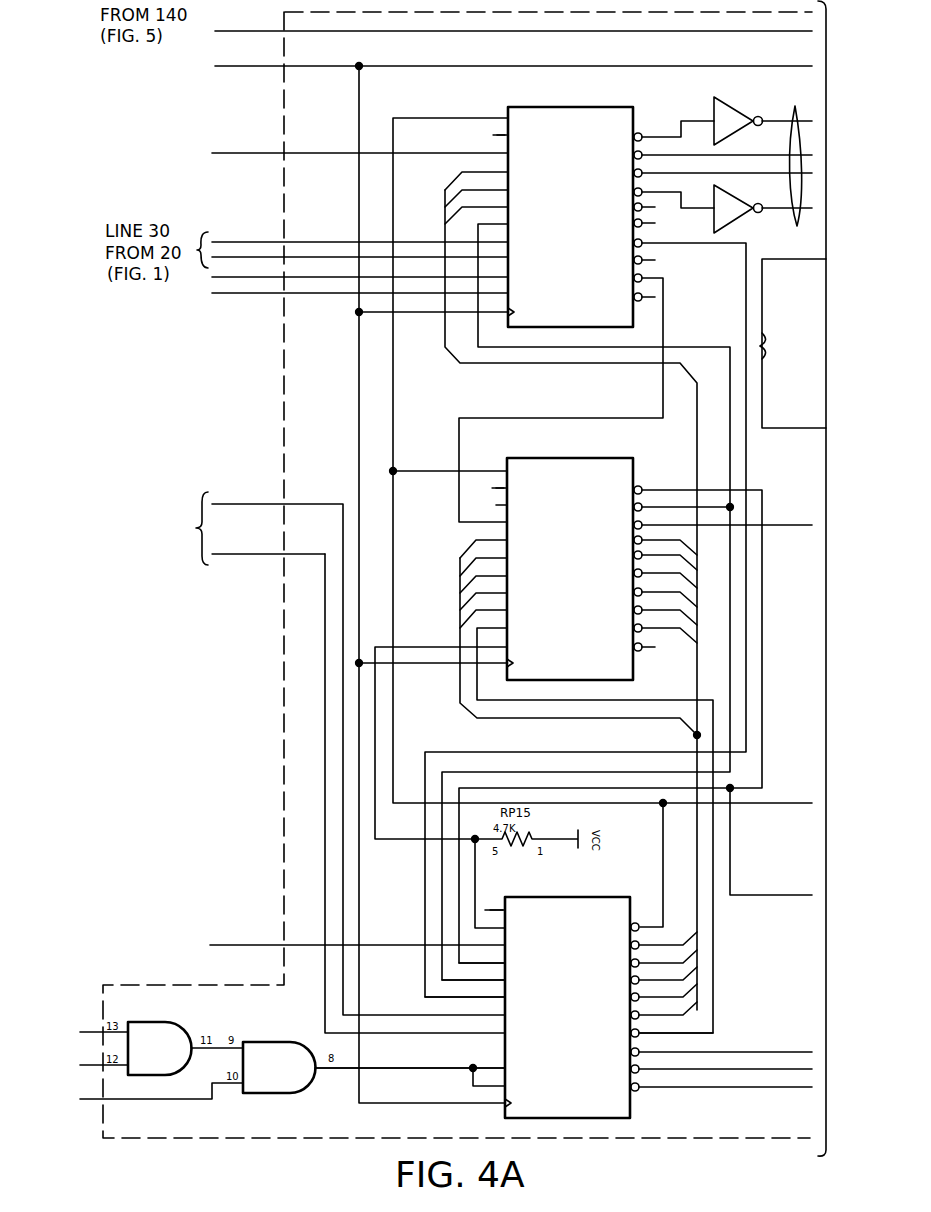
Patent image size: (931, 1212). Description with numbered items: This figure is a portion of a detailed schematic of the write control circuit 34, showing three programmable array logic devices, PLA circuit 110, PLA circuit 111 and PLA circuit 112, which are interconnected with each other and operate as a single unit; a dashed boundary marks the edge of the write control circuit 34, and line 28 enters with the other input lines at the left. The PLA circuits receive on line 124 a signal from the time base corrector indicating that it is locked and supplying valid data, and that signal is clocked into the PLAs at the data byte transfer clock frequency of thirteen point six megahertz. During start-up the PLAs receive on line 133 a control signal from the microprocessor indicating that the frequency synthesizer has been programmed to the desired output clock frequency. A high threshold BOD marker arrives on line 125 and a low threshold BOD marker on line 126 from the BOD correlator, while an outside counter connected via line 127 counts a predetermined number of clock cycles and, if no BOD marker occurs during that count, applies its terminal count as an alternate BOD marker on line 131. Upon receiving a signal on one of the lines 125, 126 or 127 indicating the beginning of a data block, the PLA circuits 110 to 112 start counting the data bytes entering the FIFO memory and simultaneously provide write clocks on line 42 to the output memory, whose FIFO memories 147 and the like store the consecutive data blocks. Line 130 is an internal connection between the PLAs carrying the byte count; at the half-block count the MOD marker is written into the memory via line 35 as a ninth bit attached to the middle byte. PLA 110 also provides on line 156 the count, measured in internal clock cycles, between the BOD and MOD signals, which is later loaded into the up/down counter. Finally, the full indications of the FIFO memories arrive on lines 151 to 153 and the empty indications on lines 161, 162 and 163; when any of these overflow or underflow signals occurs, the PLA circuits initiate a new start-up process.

The 13.6 MHz clock line from 55 28 is at (245, 65).
The write control circuit 34 is at (300, 108).
The line 35 is at (775, 525).
The line 42 is at (740, 1075).
The PLA circuit 110 is at (577, 109).
The PLA circuit 111 is at (565, 469).
The PLA circuit 112 is at (560, 902).
The line 124 is at (226, 155).
The line 125 is at (222, 240).
The line 126 is at (260, 256).
The line 127 is at (262, 296).
The line 130 is at (540, 366).
The line 131 is at (225, 279).
The line 133 is at (242, 944).
The FIFO memory 147 is at (197, 528).
The line 151 is at (323, 727).
The line 153 is at (224, 503).
The line 156 is at (788, 182).
The line 161 is at (95, 1101).
The line 162 is at (92, 1033).
The line 163 is at (95, 1064).